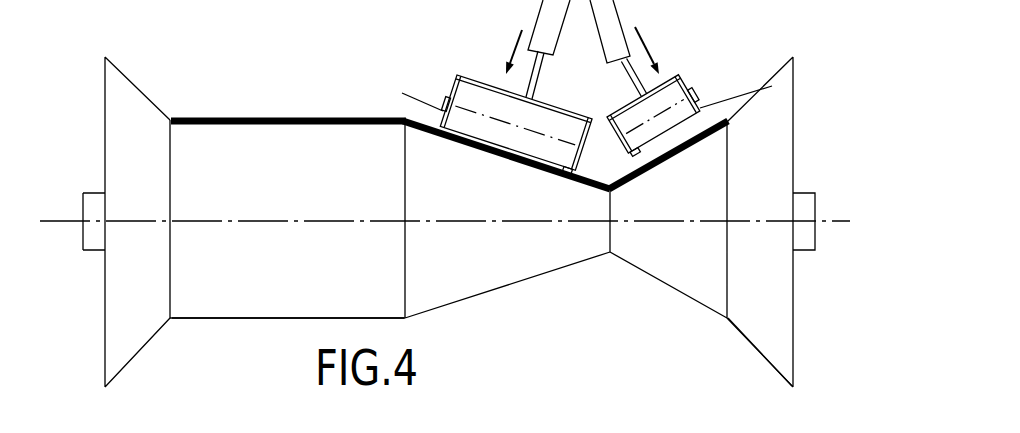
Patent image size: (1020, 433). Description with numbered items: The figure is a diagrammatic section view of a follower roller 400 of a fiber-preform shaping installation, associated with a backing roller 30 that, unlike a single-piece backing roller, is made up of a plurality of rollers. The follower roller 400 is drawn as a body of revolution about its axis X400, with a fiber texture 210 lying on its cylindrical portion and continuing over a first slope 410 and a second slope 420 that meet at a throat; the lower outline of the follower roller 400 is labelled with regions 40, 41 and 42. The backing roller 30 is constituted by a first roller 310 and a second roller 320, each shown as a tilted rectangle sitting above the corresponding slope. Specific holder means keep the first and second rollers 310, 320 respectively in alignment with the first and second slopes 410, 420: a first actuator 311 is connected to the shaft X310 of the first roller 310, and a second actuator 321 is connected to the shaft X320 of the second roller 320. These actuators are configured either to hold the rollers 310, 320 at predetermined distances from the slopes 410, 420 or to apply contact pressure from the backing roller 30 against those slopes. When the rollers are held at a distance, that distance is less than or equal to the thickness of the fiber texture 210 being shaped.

The backing roller 30 is at (646, 13).
The nozzle section 40 is at (607, 432).
The first nacelle section 41 is at (293, 375).
The second nacelle section 42 is at (752, 375).
The fiber texture 210 is at (248, 117).
The first roller 310 is at (480, 100).
The first actuator 311 is at (546, 19).
The second roller 320 is at (675, 103).
The second actuator 321 is at (601, 38).
The follower roller 400 is at (227, 356).
The first slope 410 is at (496, 155).
The second slope 420 is at (684, 153).
The shaft of the first roller X310 is at (422, 97).
The shaft of the second roller X320 is at (728, 88).
The engine axis X400 is at (838, 220).